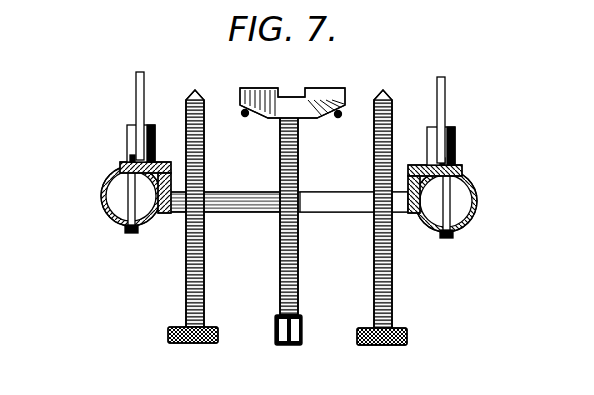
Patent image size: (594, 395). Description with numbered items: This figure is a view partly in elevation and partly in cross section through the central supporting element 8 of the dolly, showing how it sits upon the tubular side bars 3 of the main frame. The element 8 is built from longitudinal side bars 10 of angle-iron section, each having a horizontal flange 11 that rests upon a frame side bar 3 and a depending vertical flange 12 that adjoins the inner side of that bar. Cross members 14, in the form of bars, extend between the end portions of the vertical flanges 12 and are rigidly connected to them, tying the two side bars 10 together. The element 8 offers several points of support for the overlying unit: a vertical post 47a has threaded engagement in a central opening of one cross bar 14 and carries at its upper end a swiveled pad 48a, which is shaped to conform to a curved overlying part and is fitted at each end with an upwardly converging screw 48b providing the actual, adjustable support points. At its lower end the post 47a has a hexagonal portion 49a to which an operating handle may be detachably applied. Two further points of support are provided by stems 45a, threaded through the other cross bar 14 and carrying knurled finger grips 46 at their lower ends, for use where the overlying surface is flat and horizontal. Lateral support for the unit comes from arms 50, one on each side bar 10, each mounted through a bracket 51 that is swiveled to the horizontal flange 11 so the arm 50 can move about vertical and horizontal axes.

The side bars 3 is at (102, 198).
The middle supporting element 8 is at (244, 192).
The side bars 10 is at (122, 162).
The horizontal flanges 11 is at (120, 168).
The vertical flanges 12 is at (171, 174).
The cross members 14 is at (313, 200).
The stems 45a is at (428, 298).
The knurled finger grips 46 is at (168, 334).
The vertical post 47a is at (280, 292).
The pad 48a is at (292, 107).
The screws 48b is at (336, 75).
The hexagonal portion 49a is at (302, 330).
The arms 50 is at (136, 83).
The brackets 51 is at (128, 130).